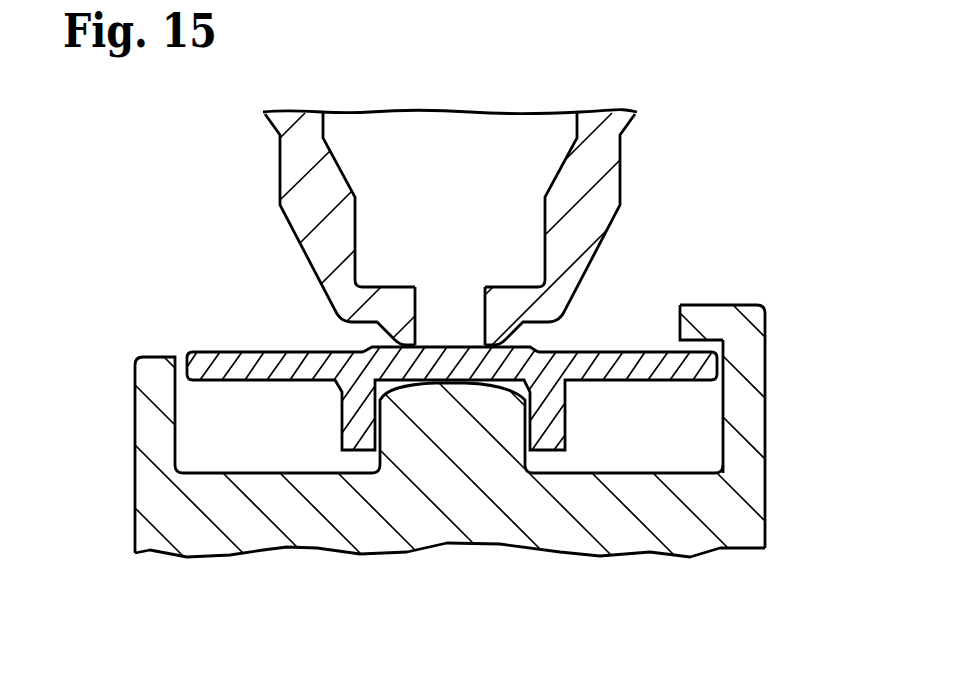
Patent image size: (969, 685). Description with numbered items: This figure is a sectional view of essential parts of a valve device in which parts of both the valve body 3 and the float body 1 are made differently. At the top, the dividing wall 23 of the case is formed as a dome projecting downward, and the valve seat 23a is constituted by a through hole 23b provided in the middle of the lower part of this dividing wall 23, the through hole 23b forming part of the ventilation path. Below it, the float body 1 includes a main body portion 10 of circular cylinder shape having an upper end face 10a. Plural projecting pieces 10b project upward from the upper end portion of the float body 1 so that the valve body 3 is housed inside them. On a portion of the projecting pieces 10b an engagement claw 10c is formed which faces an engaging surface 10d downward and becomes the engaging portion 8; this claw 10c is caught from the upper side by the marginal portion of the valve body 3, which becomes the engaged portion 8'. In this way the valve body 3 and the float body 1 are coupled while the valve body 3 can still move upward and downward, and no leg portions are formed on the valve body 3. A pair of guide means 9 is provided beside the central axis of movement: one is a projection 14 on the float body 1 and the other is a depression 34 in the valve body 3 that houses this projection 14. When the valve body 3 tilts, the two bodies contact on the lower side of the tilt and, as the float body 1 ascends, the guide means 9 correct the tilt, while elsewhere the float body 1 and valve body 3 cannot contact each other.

The float body 1 is at (713, 552).
The valve body 3 is at (606, 352).
The engaging portion 8 is at (724, 267).
The engaged portion 8' is at (778, 357).
The guide means 9 is at (360, 467).
The main body portion 10 is at (745, 523).
The upper end face 10a is at (682, 473).
The projecting piece 10b is at (150, 413).
The engagement claw 10c is at (690, 306).
The engaging surface 10d is at (700, 318).
The projection 14 is at (450, 403).
The dividing wall 23 is at (283, 177).
The valve seat 23a is at (452, 340).
The through hole 23b is at (465, 302).
The depression 34 is at (373, 351).